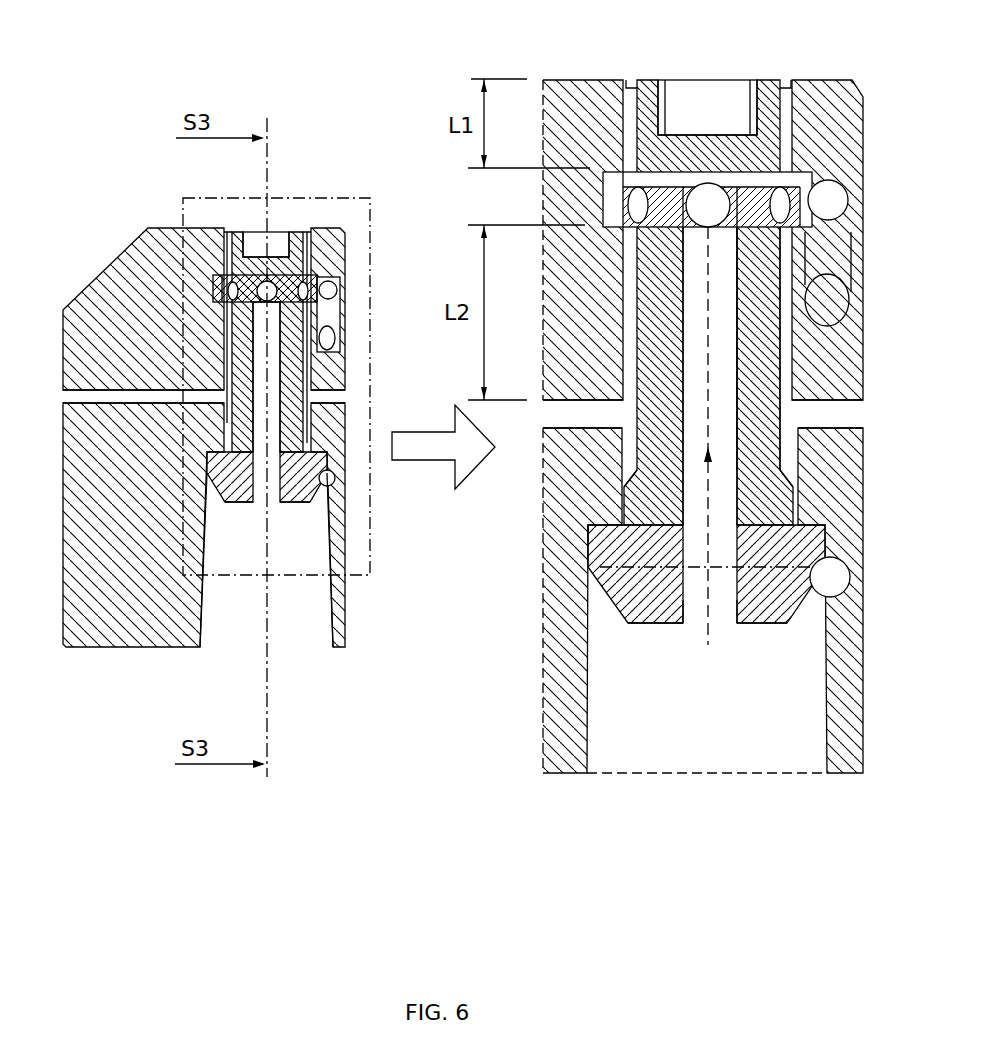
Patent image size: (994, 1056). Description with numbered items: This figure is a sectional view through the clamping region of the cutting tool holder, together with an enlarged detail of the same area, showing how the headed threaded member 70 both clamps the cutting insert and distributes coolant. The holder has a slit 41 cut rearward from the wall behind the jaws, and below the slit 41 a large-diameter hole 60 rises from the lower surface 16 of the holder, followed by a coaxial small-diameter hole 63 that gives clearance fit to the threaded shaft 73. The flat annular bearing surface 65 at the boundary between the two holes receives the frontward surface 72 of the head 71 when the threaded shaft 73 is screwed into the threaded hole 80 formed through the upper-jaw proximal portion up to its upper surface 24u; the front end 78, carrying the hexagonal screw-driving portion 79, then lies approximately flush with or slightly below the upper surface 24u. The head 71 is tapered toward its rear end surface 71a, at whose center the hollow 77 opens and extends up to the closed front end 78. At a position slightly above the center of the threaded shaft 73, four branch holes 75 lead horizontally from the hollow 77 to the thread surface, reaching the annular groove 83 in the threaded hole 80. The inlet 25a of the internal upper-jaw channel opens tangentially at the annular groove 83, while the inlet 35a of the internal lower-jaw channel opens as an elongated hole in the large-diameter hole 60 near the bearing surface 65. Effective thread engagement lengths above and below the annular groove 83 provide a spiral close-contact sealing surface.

The lower surface of the holder 16 is at (148, 648).
The upper surface of the upper-jaw proximal portion 24u is at (160, 228).
The inlet of the internal upper-jaw channel 25a is at (331, 287).
The inlet of the internal lower-jaw channel 35a is at (334, 472).
The slit 41 is at (105, 392).
The large-diameter hole 60 is at (310, 648).
The small-diameter hole 63 is at (786, 462).
The bearing surface 65 is at (597, 532).
The threaded member 70 is at (648, 640).
The head 71 is at (322, 506).
The rear end surface of the head 71a is at (297, 503).
The frontward surface of the head 72 is at (808, 518).
The threaded shaft 73 is at (792, 270).
The branch holes 75 is at (707, 215).
The hollow 77 is at (266, 372).
The front end of the threaded shaft 78 is at (764, 80).
The screw-driving portion 79 is at (292, 238).
The threaded hole 80 is at (748, 366).
The annular groove 83 is at (603, 198).